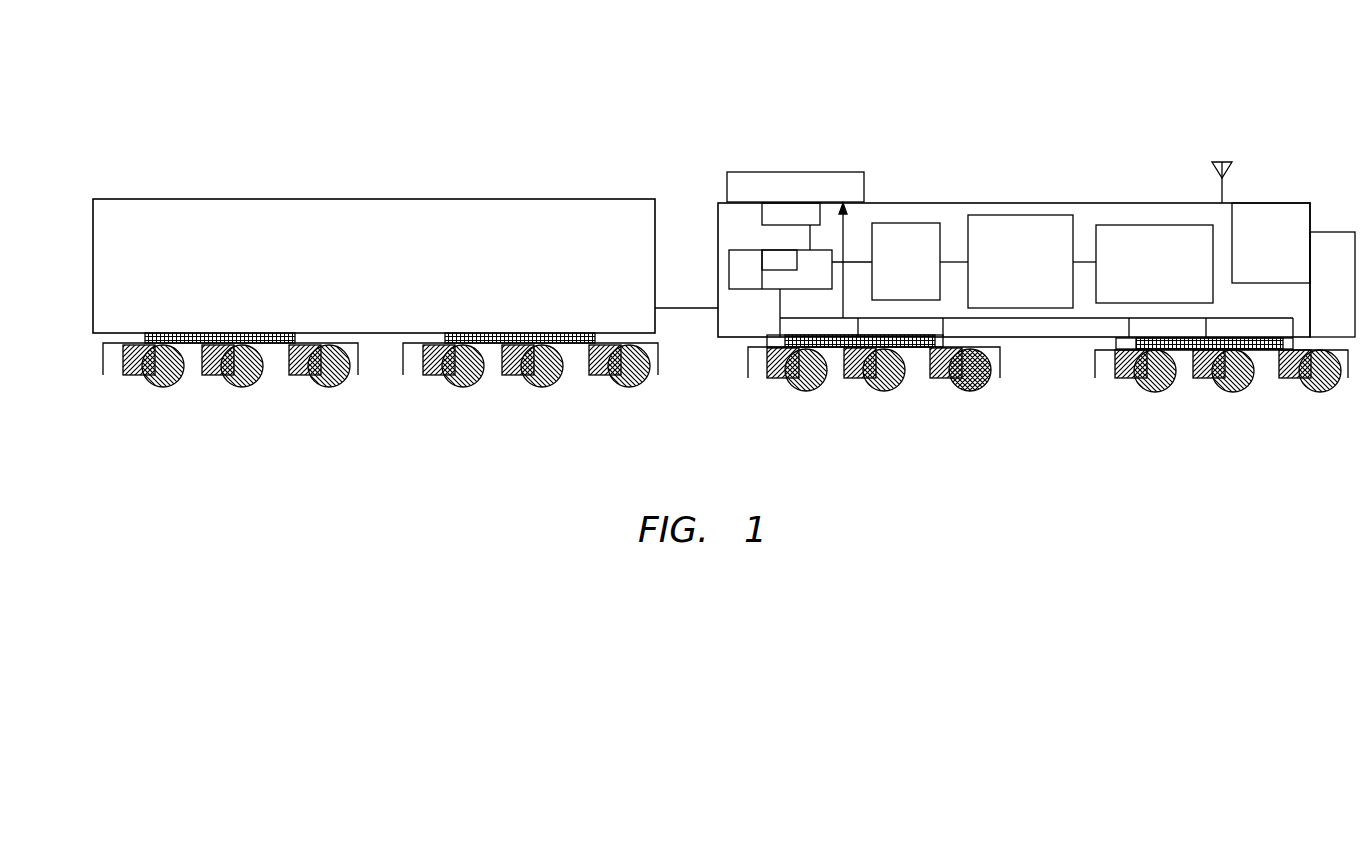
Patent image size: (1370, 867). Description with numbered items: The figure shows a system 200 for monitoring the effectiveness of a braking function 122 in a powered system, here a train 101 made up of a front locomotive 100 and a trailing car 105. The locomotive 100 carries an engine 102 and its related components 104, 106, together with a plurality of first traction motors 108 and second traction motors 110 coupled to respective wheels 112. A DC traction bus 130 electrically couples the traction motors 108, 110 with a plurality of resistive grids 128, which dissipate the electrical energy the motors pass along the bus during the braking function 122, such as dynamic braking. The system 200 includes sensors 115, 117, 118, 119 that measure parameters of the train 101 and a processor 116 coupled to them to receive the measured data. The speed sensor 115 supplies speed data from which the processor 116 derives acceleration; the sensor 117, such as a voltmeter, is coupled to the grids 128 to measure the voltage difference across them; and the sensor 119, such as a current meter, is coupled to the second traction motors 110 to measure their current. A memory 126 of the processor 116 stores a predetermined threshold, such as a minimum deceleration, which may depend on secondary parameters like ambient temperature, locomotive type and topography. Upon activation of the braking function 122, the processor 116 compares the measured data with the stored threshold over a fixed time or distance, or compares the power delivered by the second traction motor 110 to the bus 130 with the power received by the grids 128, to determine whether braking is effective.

The system 200 is at (705, 40).
The trailing car 105 is at (488, 199).
The front locomotive 100 is at (992, 203).
The train 101 is at (845, 122).
The resistive grids 128 is at (750, 172).
The sensor 117 is at (760, 215).
The speed sensor 115 is at (745, 270).
The memory 126 is at (780, 258).
The processor 116 is at (775, 282).
The DC traction bus 130 is at (848, 227).
The inverter 106 is at (905, 223).
The alternator / rectifier 104 is at (1019, 215).
The engine 102 is at (1130, 225).
The sensor 118 is at (1230, 165).
The sensor 119 is at (754, 348).
The braking function 122 is at (768, 388).
The first traction motors 108 is at (778, 378).
The wheels 112 is at (1340, 387).
The second traction motors 110 is at (1127, 378).